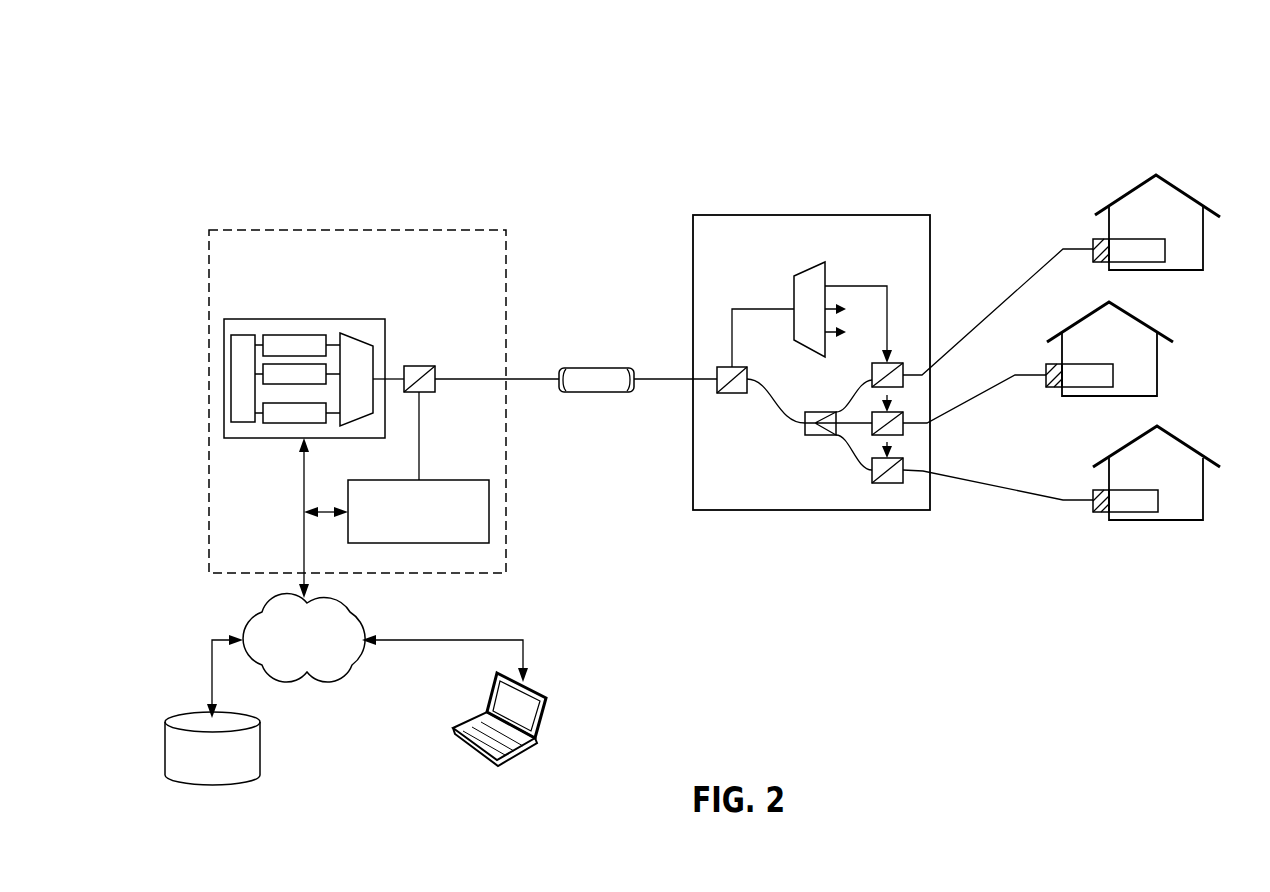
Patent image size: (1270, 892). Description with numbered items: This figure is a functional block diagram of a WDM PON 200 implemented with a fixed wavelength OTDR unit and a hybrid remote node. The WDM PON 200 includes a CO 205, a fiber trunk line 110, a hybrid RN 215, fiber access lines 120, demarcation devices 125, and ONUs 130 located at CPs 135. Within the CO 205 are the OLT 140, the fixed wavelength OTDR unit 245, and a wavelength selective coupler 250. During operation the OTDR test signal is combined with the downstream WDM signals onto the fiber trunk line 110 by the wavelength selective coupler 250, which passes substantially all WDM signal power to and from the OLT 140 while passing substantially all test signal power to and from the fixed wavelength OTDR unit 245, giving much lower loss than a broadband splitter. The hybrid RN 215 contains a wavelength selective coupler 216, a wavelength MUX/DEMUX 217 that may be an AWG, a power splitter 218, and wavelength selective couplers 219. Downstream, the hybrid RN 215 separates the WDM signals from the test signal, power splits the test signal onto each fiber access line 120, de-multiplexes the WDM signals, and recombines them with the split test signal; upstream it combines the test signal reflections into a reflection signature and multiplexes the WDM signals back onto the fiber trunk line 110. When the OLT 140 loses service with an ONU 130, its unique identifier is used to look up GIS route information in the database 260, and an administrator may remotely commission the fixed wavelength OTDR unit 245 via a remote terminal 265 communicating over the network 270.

The WDM PON 200 is at (328, 91).
The CO 205 is at (384, 414).
The OLT 140 is at (314, 366).
The wavelength selective coupler 250 is at (425, 368).
The fixed wavelength OTDR unit 245 is at (418, 511).
The fiber trunk line 110 is at (597, 366).
The hybrid remote node 215 is at (810, 379).
The wavelength selective coupler 216 is at (725, 393).
The wavelength MUX/DEMUX 217 is at (843, 312).
The power splitter 218 is at (822, 435).
The wavelength selective couplers 219 is at (903, 362).
The fiber access lines 120 is at (1008, 548).
The demarcation devices 125 is at (1093, 240).
The ONUs 130 is at (1138, 262).
The CPs 135 is at (1133, 347).
The network 270 is at (304, 637).
The database 260 is at (212, 748).
The remote terminal 265 is at (467, 745).